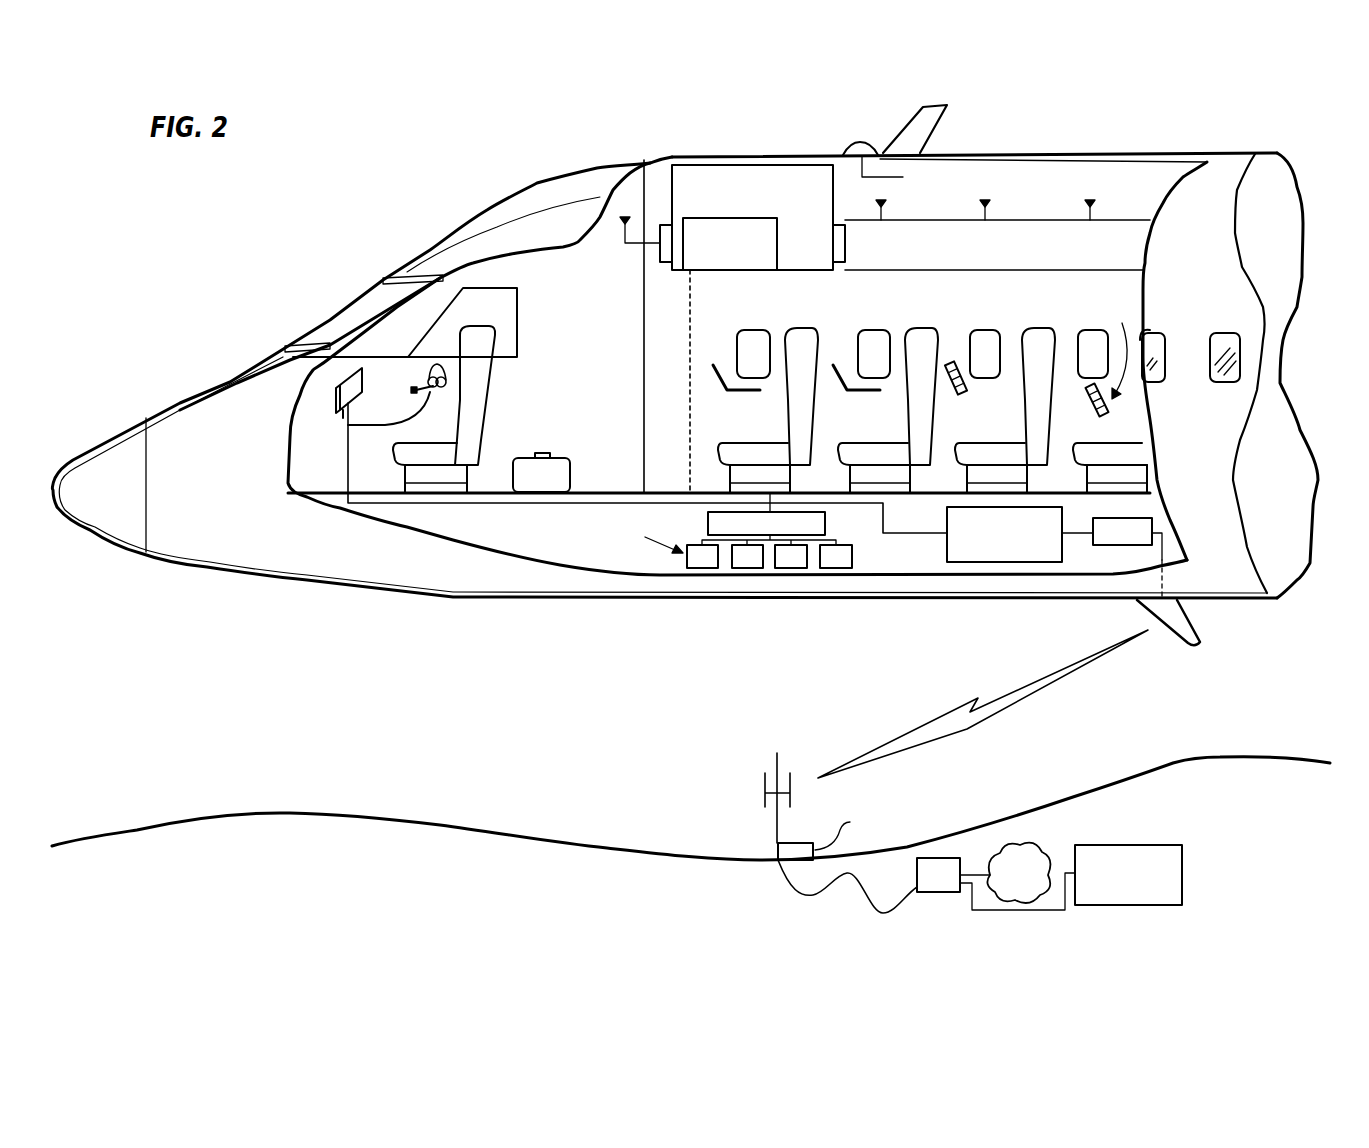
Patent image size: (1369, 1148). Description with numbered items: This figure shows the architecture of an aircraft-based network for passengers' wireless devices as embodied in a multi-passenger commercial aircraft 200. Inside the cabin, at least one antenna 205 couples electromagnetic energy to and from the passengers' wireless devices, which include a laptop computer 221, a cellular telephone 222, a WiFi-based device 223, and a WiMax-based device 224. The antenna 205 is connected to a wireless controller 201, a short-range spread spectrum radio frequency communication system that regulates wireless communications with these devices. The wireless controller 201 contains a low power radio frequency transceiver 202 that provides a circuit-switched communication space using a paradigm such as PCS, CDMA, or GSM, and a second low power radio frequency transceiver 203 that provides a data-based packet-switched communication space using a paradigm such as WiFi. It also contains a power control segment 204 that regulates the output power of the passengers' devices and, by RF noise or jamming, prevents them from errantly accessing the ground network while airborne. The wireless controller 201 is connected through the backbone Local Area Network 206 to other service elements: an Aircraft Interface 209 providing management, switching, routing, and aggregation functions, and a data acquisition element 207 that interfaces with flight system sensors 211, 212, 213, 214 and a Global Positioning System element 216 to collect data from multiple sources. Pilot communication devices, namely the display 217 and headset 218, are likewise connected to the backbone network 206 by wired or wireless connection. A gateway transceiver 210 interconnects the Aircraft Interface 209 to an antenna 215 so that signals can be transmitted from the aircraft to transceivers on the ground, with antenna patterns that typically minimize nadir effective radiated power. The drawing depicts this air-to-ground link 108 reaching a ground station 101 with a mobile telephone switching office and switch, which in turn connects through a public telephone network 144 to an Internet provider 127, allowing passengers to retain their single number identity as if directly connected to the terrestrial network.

The multi-passenger commercial aircraft 200 is at (198, 568).
The wireless controller 201 is at (672, 188).
The low power radio frequency transceiver 202 is at (845, 243).
The low power radio frequency transceiver 203 is at (659, 250).
The power control segment 204 is at (688, 262).
The antenna 205 is at (987, 205).
The Local Area Network 206 is at (470, 505).
The data acquisition element 207 is at (825, 527).
The Aircraft Interface 209 is at (1023, 562).
The gateway transceiver 210 is at (1113, 545).
The flight system sensor 211 is at (693, 568).
The flight system sensor 212 is at (742, 568).
The flight system sensor 213 is at (785, 568).
The flight system sensor 214 is at (830, 568).
The antenna 215 is at (1205, 637).
The Global Positioning System element 216 is at (857, 147).
The display 217 is at (337, 393).
The headset 218 is at (427, 385).
The laptop computer 221 is at (833, 365).
The cellular telephone 222 is at (955, 355).
The WiFi-based device 223 is at (1106, 415).
The WiMax-based device 224 is at (713, 365).
The air-to-ground communication link 108 is at (1020, 700).
The ground station network (MTSO) 101 is at (962, 917).
The PTSN network 144 is at (1035, 845).
The Internet 127 is at (1145, 845).